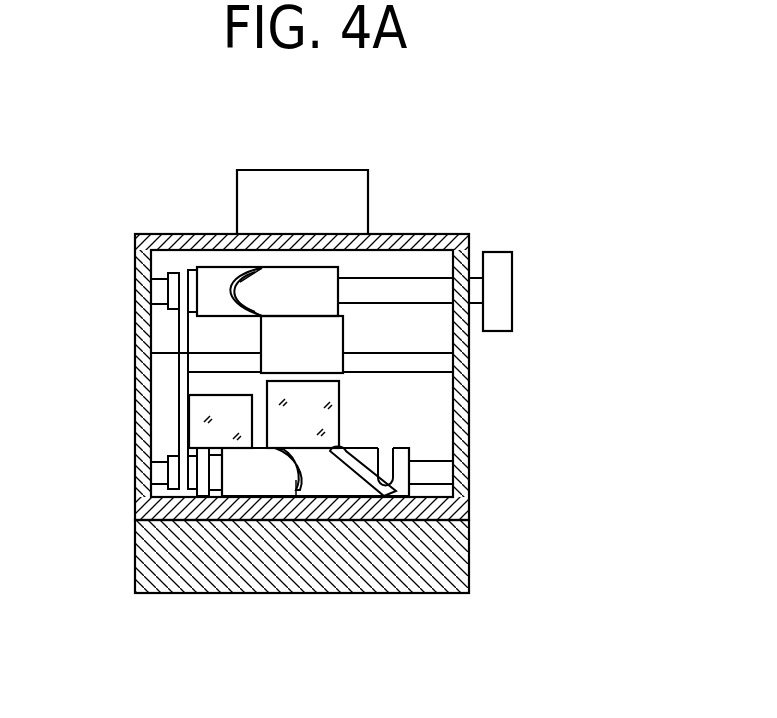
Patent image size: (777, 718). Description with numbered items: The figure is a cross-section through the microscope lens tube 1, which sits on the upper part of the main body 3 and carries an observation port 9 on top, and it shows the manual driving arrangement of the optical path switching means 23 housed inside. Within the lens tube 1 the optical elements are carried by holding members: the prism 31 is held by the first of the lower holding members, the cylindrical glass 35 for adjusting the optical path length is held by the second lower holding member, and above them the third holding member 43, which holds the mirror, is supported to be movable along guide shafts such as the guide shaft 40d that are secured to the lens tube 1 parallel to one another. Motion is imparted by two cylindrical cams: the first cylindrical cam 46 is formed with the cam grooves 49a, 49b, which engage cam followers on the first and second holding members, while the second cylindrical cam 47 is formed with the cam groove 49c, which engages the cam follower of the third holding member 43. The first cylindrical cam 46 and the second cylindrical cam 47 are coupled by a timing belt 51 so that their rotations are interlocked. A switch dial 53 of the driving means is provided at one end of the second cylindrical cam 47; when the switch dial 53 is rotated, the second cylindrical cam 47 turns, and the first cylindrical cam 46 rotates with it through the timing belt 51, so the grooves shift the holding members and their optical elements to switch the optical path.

The lens tube 1 is at (463, 455).
The main body 3 is at (450, 548).
The observation port 9 is at (335, 186).
The optical path switching means 23 is at (416, 266).
The prism 31 is at (330, 407).
The cylindrical glass 35 is at (202, 428).
The guide shaft 40d is at (437, 362).
The third holding member 43 is at (270, 343).
The first cylindrical cam 46 is at (238, 480).
The second cylindrical cam 47 is at (207, 288).
The cam groove 49a is at (357, 472).
The cam groove 49b is at (296, 480).
The cam groove 49c is at (226, 288).
The timing belt 51 is at (182, 320).
The switch dial 53 is at (502, 268).